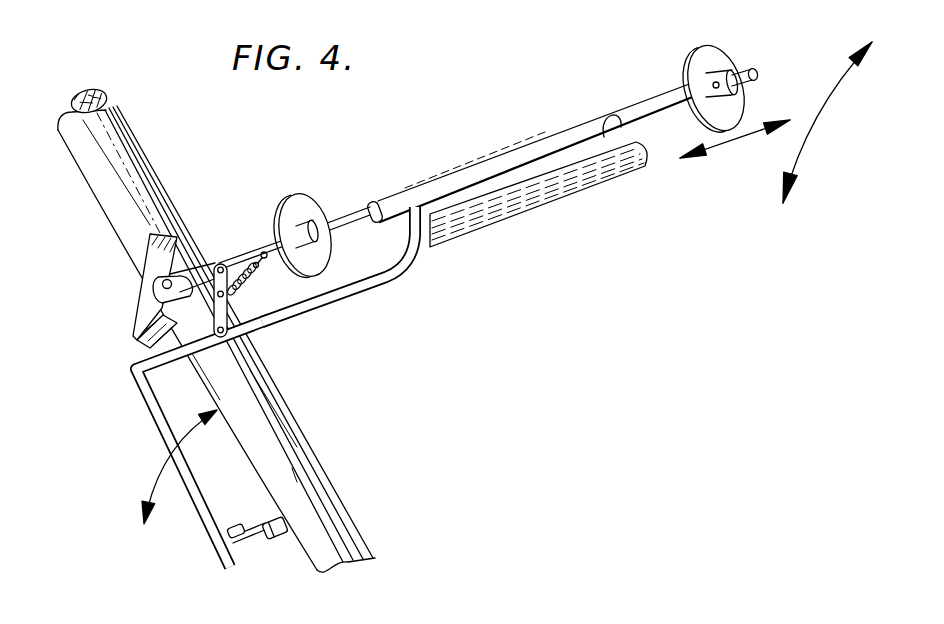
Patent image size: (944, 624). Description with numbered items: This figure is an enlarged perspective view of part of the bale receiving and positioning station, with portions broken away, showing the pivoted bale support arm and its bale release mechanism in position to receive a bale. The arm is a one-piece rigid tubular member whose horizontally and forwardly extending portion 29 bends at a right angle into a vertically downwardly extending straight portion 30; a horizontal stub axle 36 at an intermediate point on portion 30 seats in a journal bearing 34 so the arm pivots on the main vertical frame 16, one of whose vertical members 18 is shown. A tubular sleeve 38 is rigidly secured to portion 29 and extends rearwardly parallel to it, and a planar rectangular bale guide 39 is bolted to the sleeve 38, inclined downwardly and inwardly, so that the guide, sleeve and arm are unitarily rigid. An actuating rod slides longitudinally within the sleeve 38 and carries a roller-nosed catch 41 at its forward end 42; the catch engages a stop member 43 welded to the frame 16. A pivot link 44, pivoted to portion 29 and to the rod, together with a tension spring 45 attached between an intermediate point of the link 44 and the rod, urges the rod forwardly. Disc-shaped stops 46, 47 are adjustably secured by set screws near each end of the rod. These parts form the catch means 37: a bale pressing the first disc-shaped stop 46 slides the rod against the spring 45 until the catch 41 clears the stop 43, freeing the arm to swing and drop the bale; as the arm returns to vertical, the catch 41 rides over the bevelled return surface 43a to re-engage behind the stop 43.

The main vertical frame 16 is at (147, 158).
The vertical member 18 is at (118, 122).
The horizontally and forwardly extending portion 29 is at (393, 274).
The vertically downwardly extending straight portion 30 is at (130, 406).
The journal bearing 34 is at (268, 515).
The horizontal stub axle 36 is at (232, 538).
The catch means 37 is at (425, 165).
The tubular sleeve 38 is at (525, 142).
The bale guide 39 is at (613, 171).
The roller-nosed catch 41 is at (172, 243).
The forward end 42 is at (196, 262).
The stop member 43 is at (153, 256).
The bevelled return surface 43a is at (140, 352).
The pivot link 44 is at (228, 318).
The tension spring 45 is at (257, 268).
The disc-shaped stop 46 is at (300, 207).
The disc-shaped stop 47 is at (711, 56).